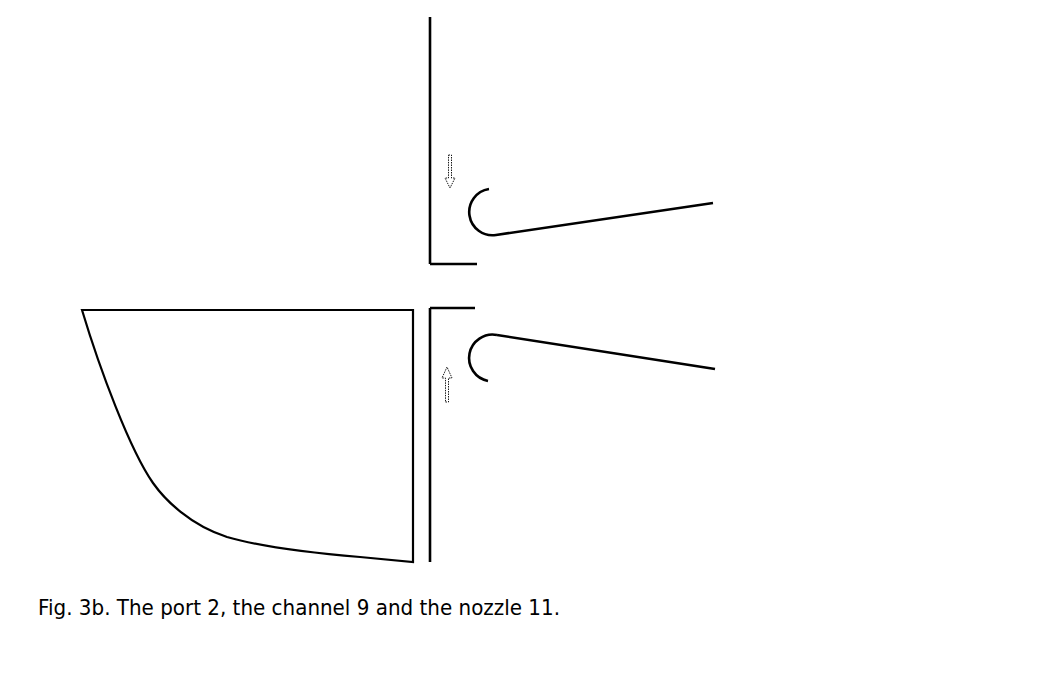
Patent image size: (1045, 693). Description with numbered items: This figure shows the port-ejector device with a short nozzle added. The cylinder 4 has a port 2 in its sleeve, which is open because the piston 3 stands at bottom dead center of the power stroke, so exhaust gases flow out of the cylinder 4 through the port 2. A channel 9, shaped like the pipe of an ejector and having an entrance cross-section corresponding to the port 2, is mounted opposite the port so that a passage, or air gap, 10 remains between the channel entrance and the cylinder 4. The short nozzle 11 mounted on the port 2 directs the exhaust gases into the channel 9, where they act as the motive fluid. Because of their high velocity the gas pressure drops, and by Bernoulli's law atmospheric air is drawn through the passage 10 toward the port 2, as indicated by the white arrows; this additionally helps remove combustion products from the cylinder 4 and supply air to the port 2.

The port 2 is at (430, 285).
The piston 3 is at (373, 420).
The cylinder 4 is at (431, 107).
The channel 9 is at (590, 350).
The passage (air gap) 10 is at (450, 210).
The nozzle 11 is at (455, 260).